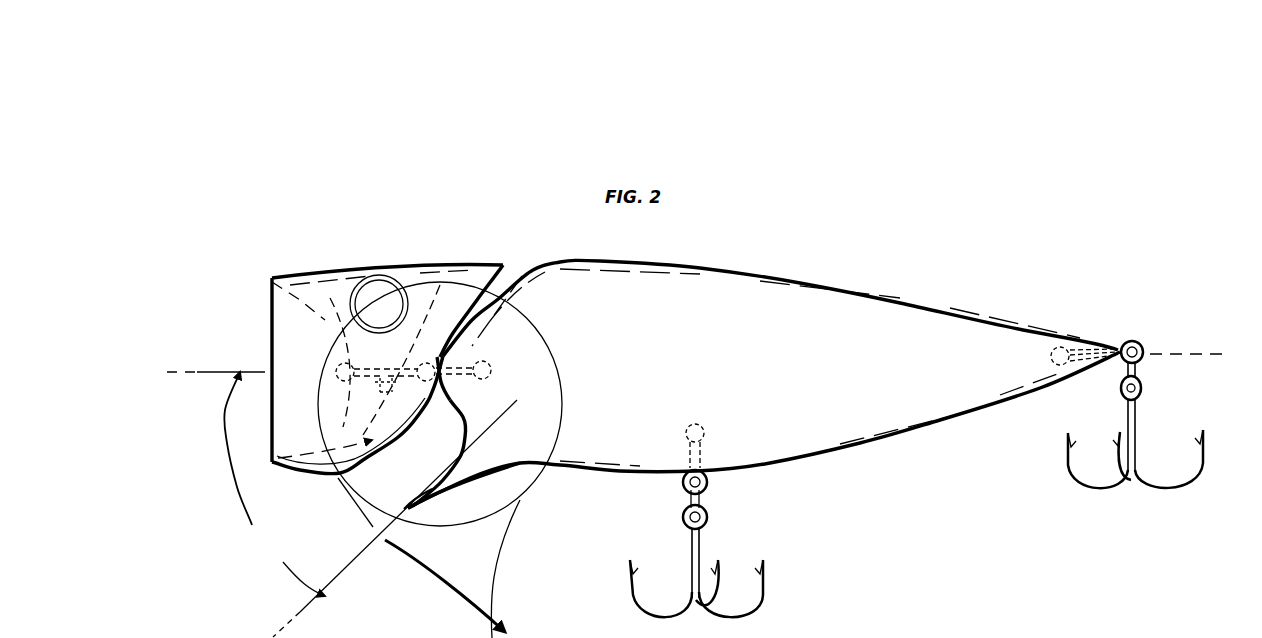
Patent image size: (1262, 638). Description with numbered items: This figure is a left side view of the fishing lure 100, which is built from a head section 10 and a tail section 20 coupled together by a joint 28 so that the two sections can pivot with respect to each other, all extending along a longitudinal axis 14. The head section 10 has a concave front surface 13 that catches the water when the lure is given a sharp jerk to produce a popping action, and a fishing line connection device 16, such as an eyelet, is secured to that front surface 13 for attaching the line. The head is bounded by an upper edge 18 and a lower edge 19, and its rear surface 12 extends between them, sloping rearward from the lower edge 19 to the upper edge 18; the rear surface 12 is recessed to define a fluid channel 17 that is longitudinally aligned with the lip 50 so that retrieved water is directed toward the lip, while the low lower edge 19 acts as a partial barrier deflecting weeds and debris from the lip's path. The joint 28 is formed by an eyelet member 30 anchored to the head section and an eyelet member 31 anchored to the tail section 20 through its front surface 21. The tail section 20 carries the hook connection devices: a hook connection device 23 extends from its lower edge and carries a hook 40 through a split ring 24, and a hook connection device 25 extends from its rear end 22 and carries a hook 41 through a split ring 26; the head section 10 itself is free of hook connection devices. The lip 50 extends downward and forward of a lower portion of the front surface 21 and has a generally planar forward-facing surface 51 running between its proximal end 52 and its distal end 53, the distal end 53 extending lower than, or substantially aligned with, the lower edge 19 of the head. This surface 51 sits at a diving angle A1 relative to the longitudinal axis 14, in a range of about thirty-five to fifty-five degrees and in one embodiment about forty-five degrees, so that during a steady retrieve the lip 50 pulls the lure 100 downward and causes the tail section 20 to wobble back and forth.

The fishing lure 100 is at (1118, 224).
The head section 10 is at (388, 266).
The rear surface 12 is at (478, 268).
The front surface 13 is at (270, 308).
The longitudinal axis 14 is at (193, 374).
The line connection device 16 is at (336, 358).
The fluid channel 17 is at (342, 470).
The upper edge 18 is at (330, 266).
The lower edge 19 is at (335, 462).
The tail section 20 is at (930, 293).
The front surface 21 is at (490, 330).
The rear end 22 is at (1112, 342).
The hook connection device 23 is at (708, 452).
The split ring 24 is at (708, 494).
The hook connection device 25 is at (1144, 346).
The split ring 26 is at (1148, 366).
The joint 28 is at (432, 362).
The eyelet member 30 is at (396, 382).
The eyelet member 31 is at (458, 378).
The hook 40 is at (765, 586).
The hook 41 is at (1070, 468).
The lip 50 is at (437, 515).
The forward-facing surface 51 is at (440, 470).
The proximal end 52 is at (465, 440).
The distal end 53 is at (406, 506).
The diving angle A1 is at (274, 484).